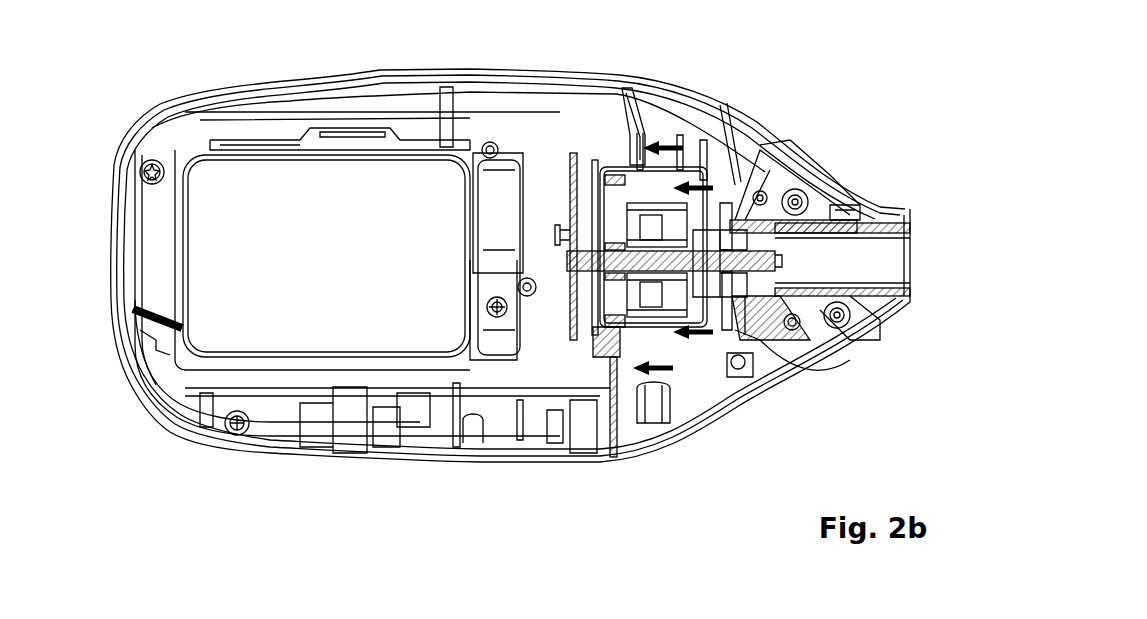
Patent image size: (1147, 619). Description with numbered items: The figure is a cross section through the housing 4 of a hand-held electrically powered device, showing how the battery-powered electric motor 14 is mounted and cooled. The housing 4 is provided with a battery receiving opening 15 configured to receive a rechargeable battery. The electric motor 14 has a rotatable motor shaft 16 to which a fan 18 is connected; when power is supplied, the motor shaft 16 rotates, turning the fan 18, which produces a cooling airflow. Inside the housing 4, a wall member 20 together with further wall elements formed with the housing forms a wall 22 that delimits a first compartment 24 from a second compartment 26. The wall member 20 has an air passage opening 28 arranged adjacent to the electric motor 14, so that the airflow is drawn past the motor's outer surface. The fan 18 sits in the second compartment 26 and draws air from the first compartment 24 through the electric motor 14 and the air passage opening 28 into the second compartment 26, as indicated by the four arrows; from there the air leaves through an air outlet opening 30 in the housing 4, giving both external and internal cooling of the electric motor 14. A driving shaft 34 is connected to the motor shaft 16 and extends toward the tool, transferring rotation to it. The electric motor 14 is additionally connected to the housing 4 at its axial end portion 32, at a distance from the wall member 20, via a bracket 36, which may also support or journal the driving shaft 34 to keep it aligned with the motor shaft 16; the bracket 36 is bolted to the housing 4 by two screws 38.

The housing 4 is at (693, 62).
The electric motor 14 is at (683, 350).
The battery receiving opening 15 is at (306, 261).
The motor shaft 16 is at (665, 265).
The fan 18 is at (577, 175).
The wall member 20 is at (640, 133).
The wall 22 is at (615, 112).
The first compartment 24 is at (663, 134).
The second compartment 26 is at (521, 154).
The air passage opening 28 is at (615, 148).
The air outlet opening 30 is at (130, 400).
The axial end portion 32 is at (717, 208).
The driving shaft 34 is at (892, 287).
The bracket 36 is at (807, 307).
The screws 38 is at (767, 196).